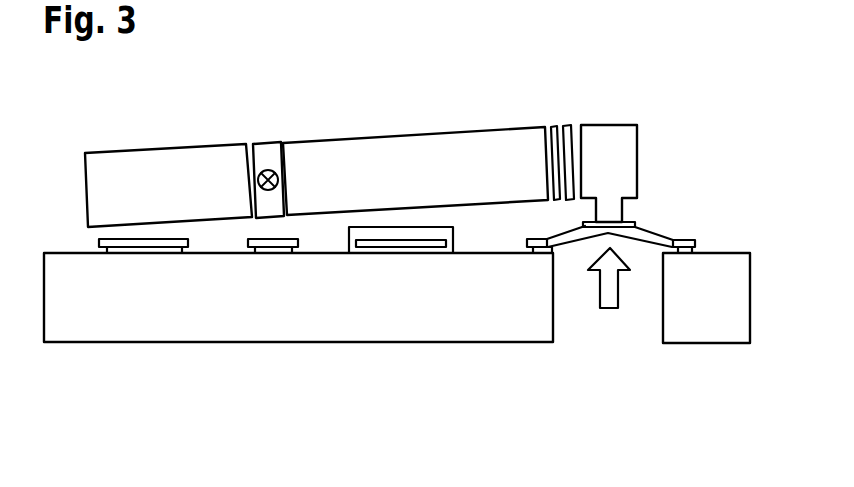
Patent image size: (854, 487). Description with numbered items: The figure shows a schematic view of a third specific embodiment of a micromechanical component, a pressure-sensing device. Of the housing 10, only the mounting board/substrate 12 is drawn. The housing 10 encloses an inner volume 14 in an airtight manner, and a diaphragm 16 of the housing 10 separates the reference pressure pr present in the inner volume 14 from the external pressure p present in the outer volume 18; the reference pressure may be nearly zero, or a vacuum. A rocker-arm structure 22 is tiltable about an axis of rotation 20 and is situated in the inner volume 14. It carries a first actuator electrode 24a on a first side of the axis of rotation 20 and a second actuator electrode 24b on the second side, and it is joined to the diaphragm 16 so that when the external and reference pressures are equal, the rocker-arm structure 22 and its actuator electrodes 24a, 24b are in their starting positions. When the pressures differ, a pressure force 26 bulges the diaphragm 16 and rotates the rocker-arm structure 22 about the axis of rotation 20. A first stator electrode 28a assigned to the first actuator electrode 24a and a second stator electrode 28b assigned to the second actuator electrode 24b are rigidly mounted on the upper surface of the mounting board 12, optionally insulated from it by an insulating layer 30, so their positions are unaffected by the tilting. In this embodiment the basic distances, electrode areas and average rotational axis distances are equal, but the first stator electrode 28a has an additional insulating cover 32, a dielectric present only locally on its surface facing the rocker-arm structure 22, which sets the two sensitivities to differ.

The housing 10 is at (712, 356).
The mounting board/substrate 12 is at (68, 330).
The inner volume 14 is at (742, 135).
The diaphragm 16 is at (657, 237).
The outer volume 18 is at (672, 467).
The axis of rotation 20 is at (268, 172).
The rocker-arm structure 22 is at (390, 124).
The first actuator electrode 24a is at (508, 140).
The second actuator electrode 24b is at (122, 167).
The pressure force 26 is at (610, 308).
The first stator electrode 28a is at (400, 244).
The second stator electrode 28b is at (186, 243).
The insulating layer 30 is at (275, 252).
The additional insulating cover 32 is at (447, 233).